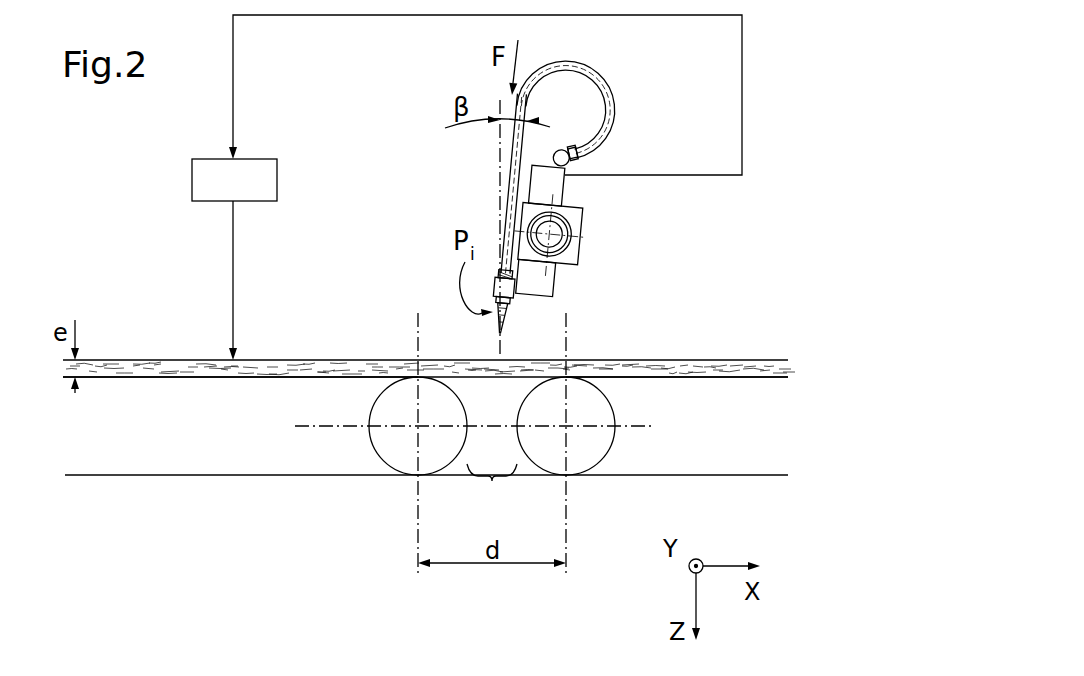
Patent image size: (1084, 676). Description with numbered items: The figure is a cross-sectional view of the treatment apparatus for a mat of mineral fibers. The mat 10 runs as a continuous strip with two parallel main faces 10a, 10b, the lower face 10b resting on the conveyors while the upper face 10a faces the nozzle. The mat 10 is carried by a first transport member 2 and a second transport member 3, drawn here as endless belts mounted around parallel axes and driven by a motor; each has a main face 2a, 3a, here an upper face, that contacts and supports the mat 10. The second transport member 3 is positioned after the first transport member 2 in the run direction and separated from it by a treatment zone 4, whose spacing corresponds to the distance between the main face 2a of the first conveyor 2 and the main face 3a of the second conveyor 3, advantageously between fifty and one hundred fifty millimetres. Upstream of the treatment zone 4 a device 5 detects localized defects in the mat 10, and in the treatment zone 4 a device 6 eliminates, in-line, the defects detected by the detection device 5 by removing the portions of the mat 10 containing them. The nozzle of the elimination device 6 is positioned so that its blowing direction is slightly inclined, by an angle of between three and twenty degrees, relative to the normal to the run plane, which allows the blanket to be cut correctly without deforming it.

The first transport member 2 is at (221, 485).
The main face of first transport member 2a is at (350, 365).
The second transport member 3 is at (653, 485).
The main face of second transport member 3a is at (706, 365).
The treatment zone 4 is at (492, 444).
The device for detecting localized defects 5 is at (192, 180).
The device for eliminating defects 6 is at (565, 187).
The mat of mineral fibers 10 is at (429, 354).
The main face of the mat 10a is at (202, 350).
The main face of the mat 10b is at (215, 387).